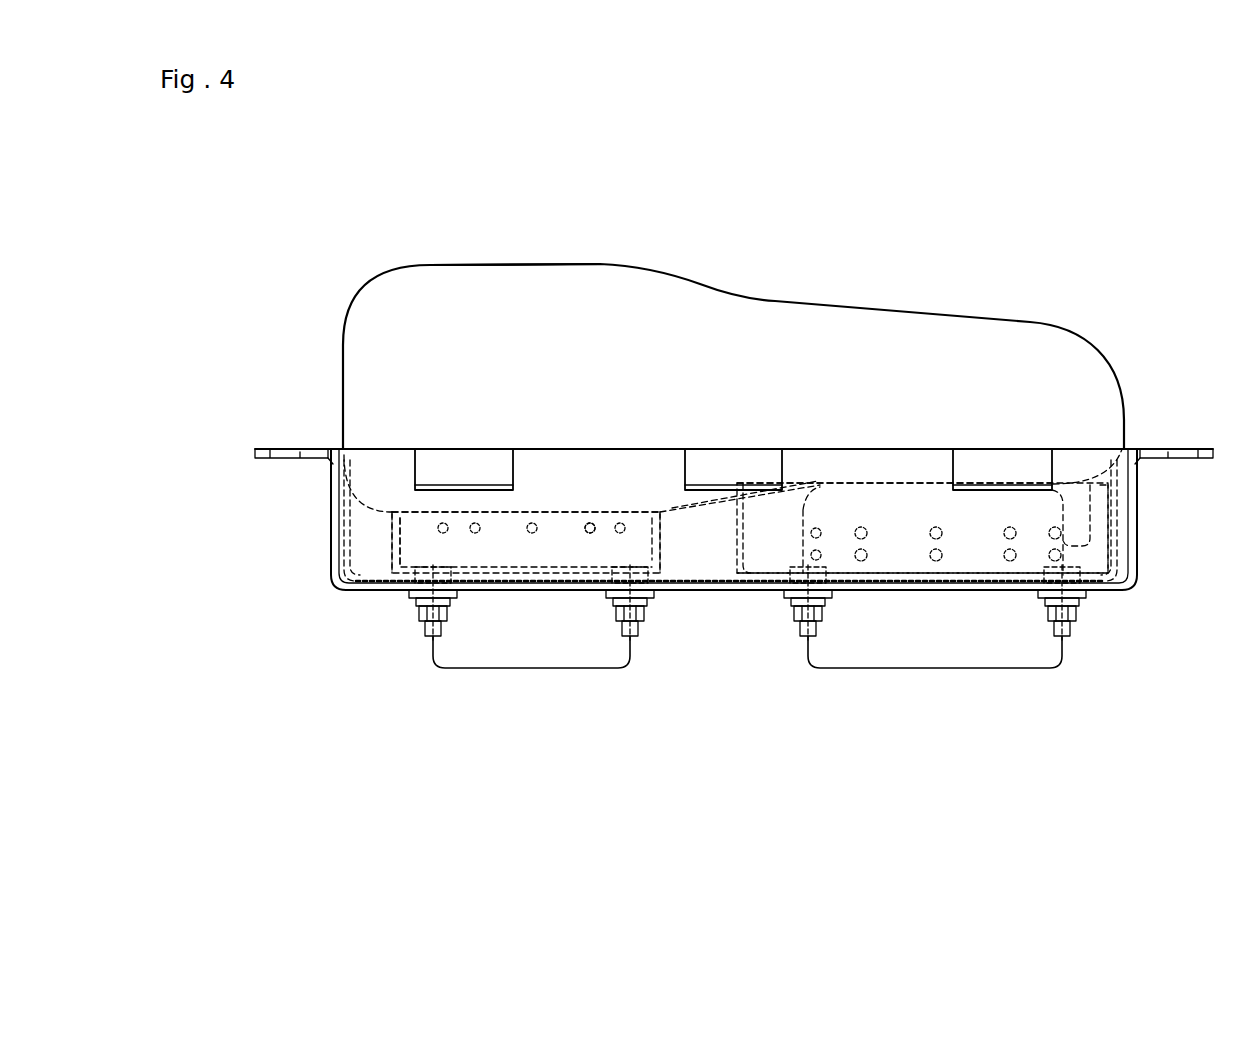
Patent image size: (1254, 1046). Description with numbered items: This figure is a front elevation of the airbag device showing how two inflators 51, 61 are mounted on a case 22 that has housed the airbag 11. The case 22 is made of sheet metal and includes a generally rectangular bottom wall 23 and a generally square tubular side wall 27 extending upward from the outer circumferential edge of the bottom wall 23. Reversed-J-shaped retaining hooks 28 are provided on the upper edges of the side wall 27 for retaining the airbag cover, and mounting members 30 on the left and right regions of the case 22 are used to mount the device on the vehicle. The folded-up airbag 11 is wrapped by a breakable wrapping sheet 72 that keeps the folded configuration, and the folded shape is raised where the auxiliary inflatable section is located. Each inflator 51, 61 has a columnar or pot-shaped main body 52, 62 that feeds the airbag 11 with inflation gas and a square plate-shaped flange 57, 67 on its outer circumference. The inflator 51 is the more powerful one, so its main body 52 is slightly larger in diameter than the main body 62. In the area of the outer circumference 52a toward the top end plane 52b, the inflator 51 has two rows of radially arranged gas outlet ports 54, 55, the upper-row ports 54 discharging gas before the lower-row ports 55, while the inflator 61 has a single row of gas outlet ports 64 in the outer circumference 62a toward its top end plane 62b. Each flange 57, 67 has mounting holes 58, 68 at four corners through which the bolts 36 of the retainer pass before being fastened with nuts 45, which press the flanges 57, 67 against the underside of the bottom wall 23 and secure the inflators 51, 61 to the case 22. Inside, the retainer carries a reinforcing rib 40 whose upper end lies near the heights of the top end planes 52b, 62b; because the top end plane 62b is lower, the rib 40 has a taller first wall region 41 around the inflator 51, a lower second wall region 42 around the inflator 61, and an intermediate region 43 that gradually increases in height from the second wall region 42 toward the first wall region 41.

The airbag 11 is at (722, 318).
The wrapping sheet 72 is at (620, 265).
The mounting member 30 is at (262, 449).
The case 22 is at (648, 554).
The side wall 27 is at (346, 537).
The bottom wall 23 is at (366, 592).
The retaining hook 28 is at (440, 468).
The intermediate region 43 is at (707, 500).
The reinforcing rib 40 is at (733, 515).
The second wall region 42 is at (392, 533).
The first wall region 41 is at (1112, 520).
The inflator 61 is at (493, 594).
The main body 62 is at (520, 655).
The outer circumference 62a is at (630, 558).
The top end plane 62b is at (540, 510).
The gas outlet ports 64 is at (590, 522).
The flange 67 is at (400, 597).
The mounting hole 68 is at (410, 600).
The inflator 51 is at (962, 542).
The main body 52 is at (948, 655).
The outer circumference 52a is at (803, 510).
The top end plane 52b is at (938, 490).
The gas outlet ports 54 is at (862, 527).
The gas outlet ports 55 is at (853, 590).
The flange 57 is at (1092, 596).
The mounting hole 58 is at (1042, 593).
The nut 45 is at (1080, 612).
The bolt 36 is at (1065, 636).